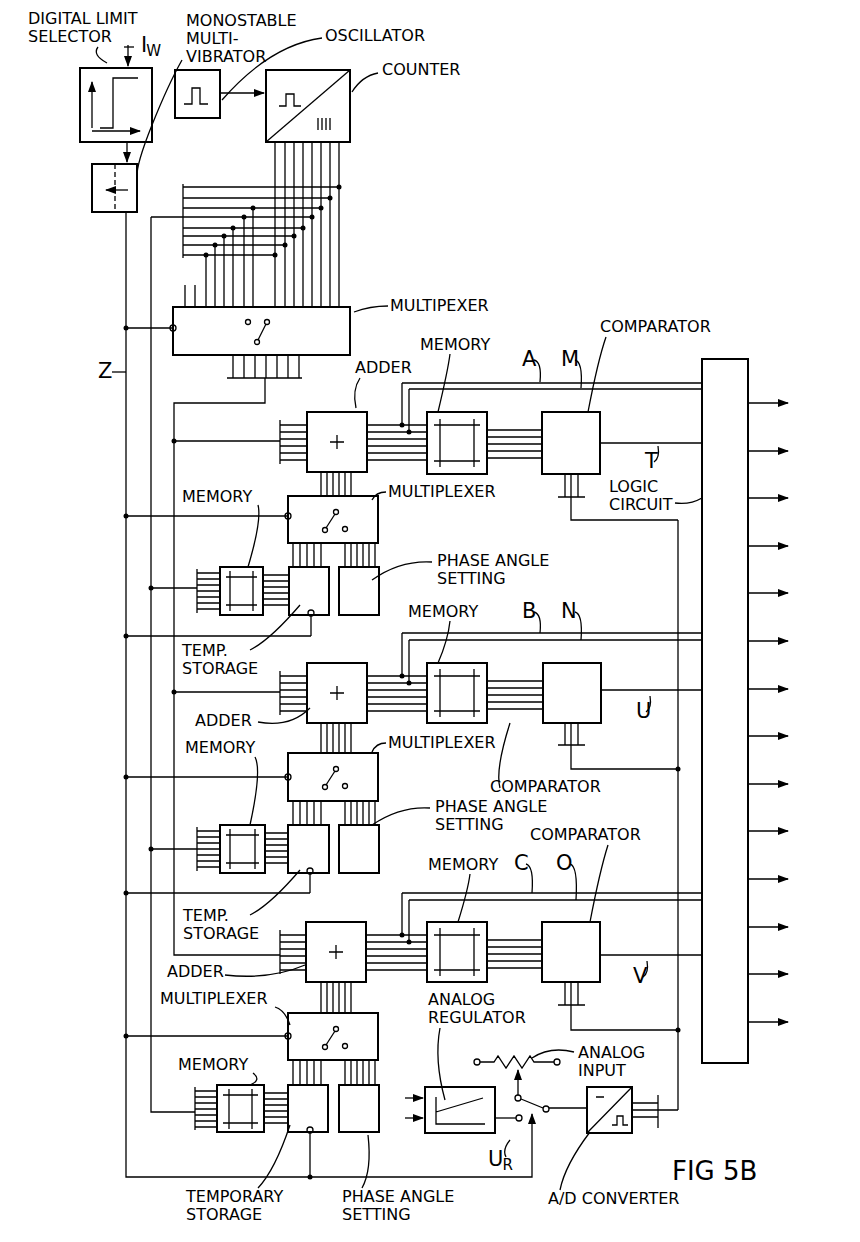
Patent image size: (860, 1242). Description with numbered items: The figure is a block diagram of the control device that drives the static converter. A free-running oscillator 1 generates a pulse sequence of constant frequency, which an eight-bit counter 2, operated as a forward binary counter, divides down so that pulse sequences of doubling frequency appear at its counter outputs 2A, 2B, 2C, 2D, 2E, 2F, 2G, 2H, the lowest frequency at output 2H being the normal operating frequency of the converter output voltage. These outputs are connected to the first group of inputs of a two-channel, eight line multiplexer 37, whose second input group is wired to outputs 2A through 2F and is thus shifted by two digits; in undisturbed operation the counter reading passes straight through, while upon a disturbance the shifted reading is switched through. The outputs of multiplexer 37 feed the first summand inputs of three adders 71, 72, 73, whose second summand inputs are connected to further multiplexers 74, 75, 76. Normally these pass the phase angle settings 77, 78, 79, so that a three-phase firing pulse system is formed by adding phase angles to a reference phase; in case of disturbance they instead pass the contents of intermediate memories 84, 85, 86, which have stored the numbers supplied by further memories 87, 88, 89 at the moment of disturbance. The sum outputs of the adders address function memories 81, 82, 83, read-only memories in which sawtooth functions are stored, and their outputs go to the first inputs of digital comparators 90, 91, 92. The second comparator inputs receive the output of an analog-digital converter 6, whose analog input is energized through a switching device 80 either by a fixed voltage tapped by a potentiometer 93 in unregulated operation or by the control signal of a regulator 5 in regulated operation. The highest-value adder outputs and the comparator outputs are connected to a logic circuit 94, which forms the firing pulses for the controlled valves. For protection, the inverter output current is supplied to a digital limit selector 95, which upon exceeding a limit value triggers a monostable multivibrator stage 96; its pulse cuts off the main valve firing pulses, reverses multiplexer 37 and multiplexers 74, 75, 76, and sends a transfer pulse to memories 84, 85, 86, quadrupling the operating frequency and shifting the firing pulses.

The digital limit selector 95 is at (80, 110).
The monostable multivibrator stage 96 is at (92, 190).
The free-running oscillator 1 is at (220, 80).
The 8-bit counter 2 is at (350, 111).
The counter output 2A is at (273, 153).
The counter output 2B is at (283, 170).
The counter output 2C is at (296, 150).
The counter output 2D is at (305, 168).
The counter output 2E is at (314, 190).
The counter output 2F is at (323, 222).
The counter output 2G is at (332, 252).
The counter output 2H is at (341, 278).
The two-channel eight line multiplexer 37 is at (350, 331).
The adder 71 is at (336, 412).
The adder 72 is at (336, 663).
The adder 73 is at (338, 925).
The two-channel eight line multiplexer 74 is at (378, 521).
The two-channel eight line multiplexer 75 is at (378, 780).
The two-channel eight line multiplexer 76 is at (378, 1038).
The phase angle setting 77 is at (379, 586).
The phase angle setting 78 is at (379, 847).
The phase angle setting 79 is at (356, 1133).
The function memory 81 is at (487, 425).
The function memory 82 is at (487, 676).
The function memory 83 is at (487, 935).
The intermediate memory 84 is at (290, 570).
The intermediate memory 85 is at (290, 830).
The intermediate memory 86 is at (305, 1133).
The further memory 87 is at (236, 567).
The further memory 88 is at (236, 825).
The further memory 89 is at (237, 1132).
The digital comparator 90 is at (600, 430).
The digital comparator 91 is at (601, 681).
The digital comparator 92 is at (600, 940).
The potentiometer 93 is at (490, 1057).
The logic circuit 94 is at (738, 733).
The regulator 5 is at (464, 1135).
The analog-digital converter 6 is at (611, 1137).
The switching device 80 is at (530, 1104).